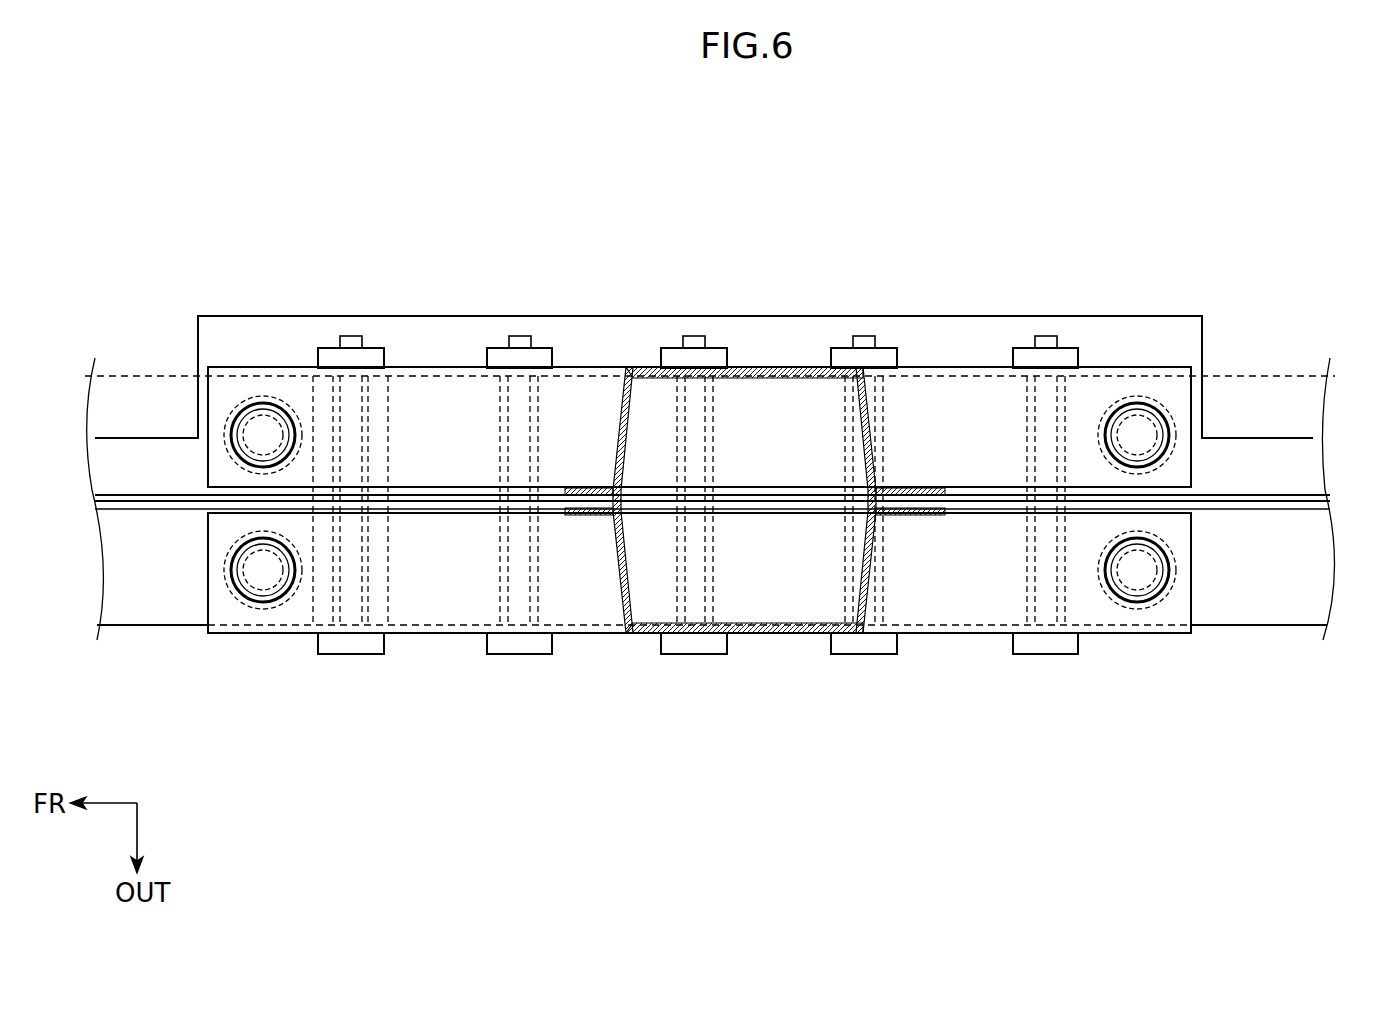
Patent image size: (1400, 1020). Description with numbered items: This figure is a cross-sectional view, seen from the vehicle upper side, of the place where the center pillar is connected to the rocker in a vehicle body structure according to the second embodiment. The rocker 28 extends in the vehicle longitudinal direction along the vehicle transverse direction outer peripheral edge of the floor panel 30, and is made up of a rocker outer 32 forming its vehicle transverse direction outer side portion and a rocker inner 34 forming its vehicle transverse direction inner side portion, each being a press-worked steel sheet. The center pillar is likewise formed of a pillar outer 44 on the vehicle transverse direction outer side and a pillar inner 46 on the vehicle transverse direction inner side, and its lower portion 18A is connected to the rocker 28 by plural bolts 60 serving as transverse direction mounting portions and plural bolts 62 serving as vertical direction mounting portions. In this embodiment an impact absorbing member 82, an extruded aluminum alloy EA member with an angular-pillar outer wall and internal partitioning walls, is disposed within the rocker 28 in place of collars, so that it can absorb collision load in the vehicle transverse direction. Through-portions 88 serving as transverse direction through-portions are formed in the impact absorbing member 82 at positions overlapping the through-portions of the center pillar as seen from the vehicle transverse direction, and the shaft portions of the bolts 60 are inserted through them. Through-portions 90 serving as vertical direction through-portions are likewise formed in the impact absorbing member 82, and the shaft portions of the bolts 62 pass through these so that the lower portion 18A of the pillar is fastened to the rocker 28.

The lower portion 18A is at (966, 612).
The rocker 28 is at (1300, 632).
The floor panel 30 is at (1307, 402).
The rocker outer 32 is at (1317, 558).
The rocker inner 34 is at (1307, 468).
The pillar outer 44 is at (603, 612).
The pillar inner 46 is at (600, 388).
The bolts 60 is at (356, 646).
The bolts 62 is at (263, 401).
The impact absorbing member 82 is at (1246, 706).
The through-portions 88 is at (366, 600).
The through-portions 90 is at (296, 412).